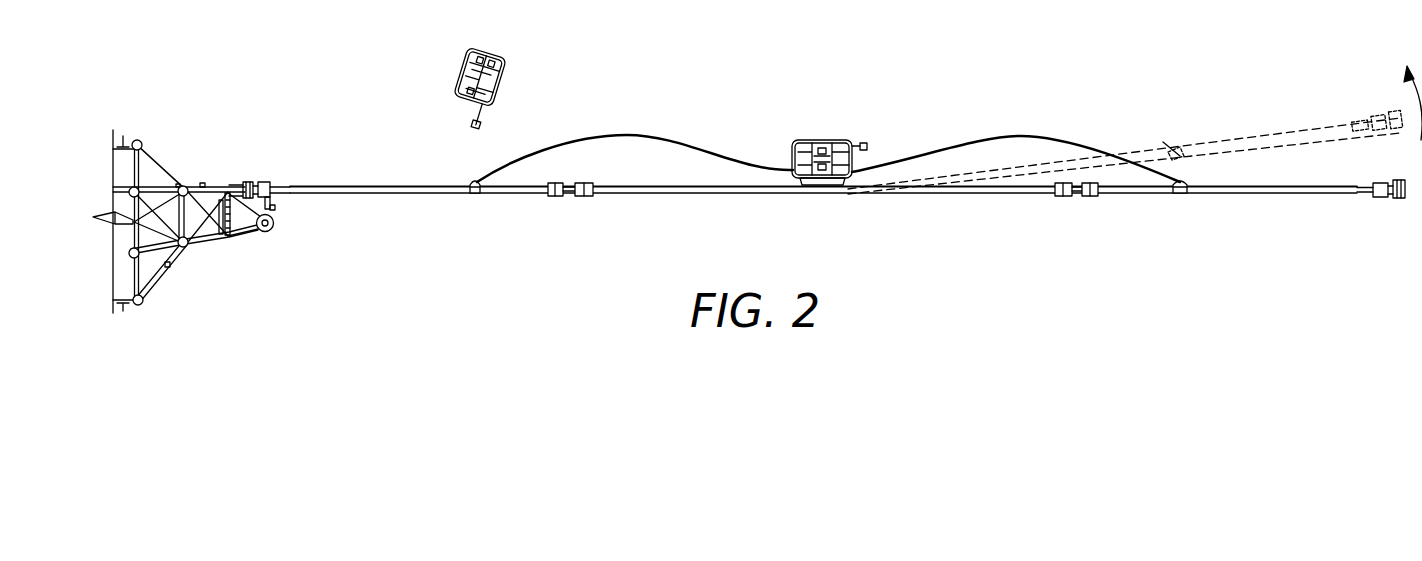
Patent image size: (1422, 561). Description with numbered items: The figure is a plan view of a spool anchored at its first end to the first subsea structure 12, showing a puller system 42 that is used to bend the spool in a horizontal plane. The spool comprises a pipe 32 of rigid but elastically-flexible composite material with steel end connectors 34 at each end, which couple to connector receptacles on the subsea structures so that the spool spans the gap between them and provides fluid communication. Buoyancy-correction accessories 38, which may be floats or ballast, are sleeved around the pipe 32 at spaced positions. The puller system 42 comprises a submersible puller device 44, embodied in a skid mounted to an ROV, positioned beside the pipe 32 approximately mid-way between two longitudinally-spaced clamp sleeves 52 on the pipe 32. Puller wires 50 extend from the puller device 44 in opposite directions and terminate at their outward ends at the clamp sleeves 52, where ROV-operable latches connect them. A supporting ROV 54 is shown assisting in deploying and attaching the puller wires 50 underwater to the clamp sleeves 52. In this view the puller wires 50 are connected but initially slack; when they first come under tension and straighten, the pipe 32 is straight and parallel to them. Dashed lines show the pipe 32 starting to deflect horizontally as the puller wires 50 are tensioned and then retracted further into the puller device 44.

The subsea structure 12 is at (250, 232).
The pipe 32 is at (753, 193).
The end connector 34 is at (266, 181).
The buoyancy-correction accessory 38 is at (582, 196).
The puller system 42 is at (871, 101).
The puller device 44 is at (818, 140).
The puller wire 50 is at (596, 135).
The clamp sleeve 52 is at (476, 194).
The supporting ROV 54 is at (468, 68).